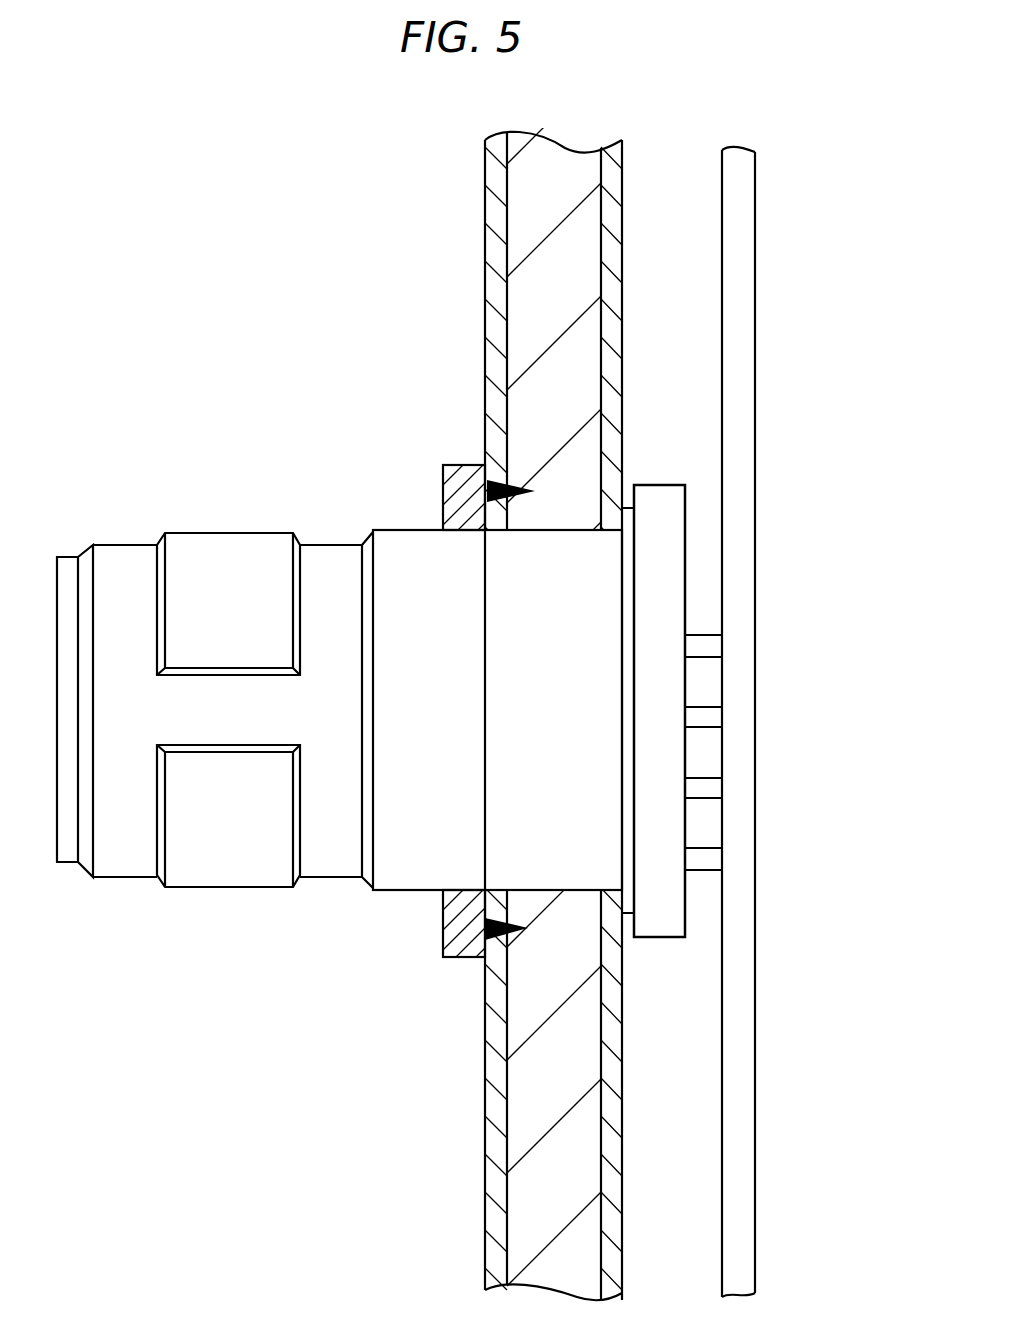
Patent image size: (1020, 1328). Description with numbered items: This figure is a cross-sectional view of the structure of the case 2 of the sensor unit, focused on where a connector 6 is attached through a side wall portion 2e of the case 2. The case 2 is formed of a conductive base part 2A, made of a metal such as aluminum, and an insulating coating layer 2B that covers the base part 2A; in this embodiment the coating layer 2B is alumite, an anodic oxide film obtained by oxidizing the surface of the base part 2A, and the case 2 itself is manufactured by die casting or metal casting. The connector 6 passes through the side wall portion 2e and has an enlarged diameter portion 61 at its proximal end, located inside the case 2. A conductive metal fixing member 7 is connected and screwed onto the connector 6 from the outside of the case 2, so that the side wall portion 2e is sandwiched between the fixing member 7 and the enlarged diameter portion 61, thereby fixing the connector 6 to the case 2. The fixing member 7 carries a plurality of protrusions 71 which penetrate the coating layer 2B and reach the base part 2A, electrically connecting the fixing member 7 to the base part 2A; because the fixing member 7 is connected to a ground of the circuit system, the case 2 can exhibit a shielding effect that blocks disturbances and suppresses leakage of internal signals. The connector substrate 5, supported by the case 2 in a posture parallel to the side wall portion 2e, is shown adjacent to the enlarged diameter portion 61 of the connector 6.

The case 2 is at (595, 685).
The base part 2A is at (528, 320).
The coating layer 2B is at (497, 257).
The side wall portion 2e is at (530, 1120).
The connector substrate 5 is at (772, 1100).
The connector 6 is at (120, 526).
The fixing member 7 is at (430, 491).
The enlarged diameter portion 61 is at (667, 558).
The protrusions 71 is at (535, 491).